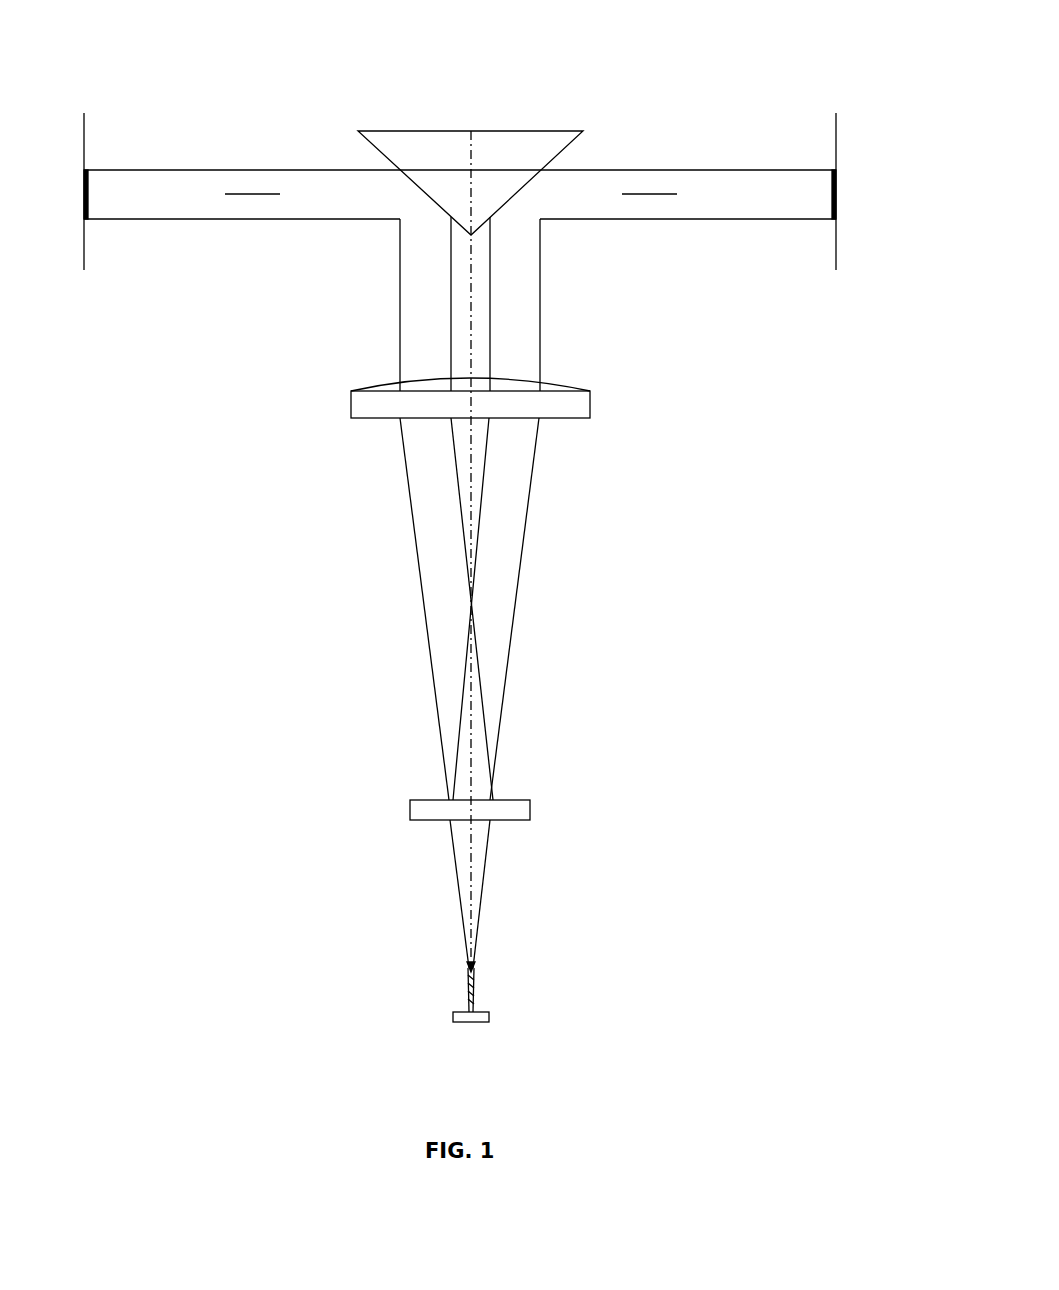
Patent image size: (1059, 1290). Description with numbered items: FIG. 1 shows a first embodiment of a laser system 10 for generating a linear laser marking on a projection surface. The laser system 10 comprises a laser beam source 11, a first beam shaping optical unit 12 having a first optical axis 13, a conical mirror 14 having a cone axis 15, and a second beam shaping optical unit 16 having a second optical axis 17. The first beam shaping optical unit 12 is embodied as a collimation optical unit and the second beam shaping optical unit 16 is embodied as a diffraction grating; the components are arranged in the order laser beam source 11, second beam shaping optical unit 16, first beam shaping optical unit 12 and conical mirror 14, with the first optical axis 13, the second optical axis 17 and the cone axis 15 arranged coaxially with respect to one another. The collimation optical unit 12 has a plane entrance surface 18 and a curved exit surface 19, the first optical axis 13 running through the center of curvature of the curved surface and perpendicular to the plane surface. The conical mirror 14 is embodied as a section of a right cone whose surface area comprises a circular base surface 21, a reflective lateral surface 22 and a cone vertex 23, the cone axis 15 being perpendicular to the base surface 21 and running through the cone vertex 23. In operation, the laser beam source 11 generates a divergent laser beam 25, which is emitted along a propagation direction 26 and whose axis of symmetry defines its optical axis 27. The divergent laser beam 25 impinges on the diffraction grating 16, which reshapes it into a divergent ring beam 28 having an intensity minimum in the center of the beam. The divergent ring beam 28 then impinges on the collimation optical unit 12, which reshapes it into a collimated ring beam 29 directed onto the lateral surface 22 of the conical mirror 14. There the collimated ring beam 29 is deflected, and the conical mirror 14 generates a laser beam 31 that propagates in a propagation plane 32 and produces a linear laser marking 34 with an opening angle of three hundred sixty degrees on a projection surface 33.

The laser system 10 is at (733, 1015).
The laser beam source 11 is at (338, 1002).
The first beam shaping optical unit 12 is at (338, 404).
The first optical axis 13 is at (470, 352).
The conical mirror 14 is at (470, 118).
The cone axis 15 is at (472, 150).
The second beam shaping optical unit 16 is at (338, 812).
The second optical axis 17 is at (458, 762).
The entrance surface 18 is at (570, 420).
The exit surface 19 is at (571, 382).
The base surface 21 is at (393, 131).
The lateral surface 22 is at (376, 149).
The cone vertex 23 is at (470, 304).
The laser beam 25 is at (452, 886).
The propagation direction 26 is at (465, 986).
The optical axis 27 is at (478, 920).
The ring beam 28 is at (422, 592).
The collimated ring beam 29 is at (400, 285).
The laser beam 31 is at (203, 170).
The propagation plane 32 is at (248, 194).
The projection surface 33 is at (88, 122).
The linear laser marking 34 is at (88, 190).